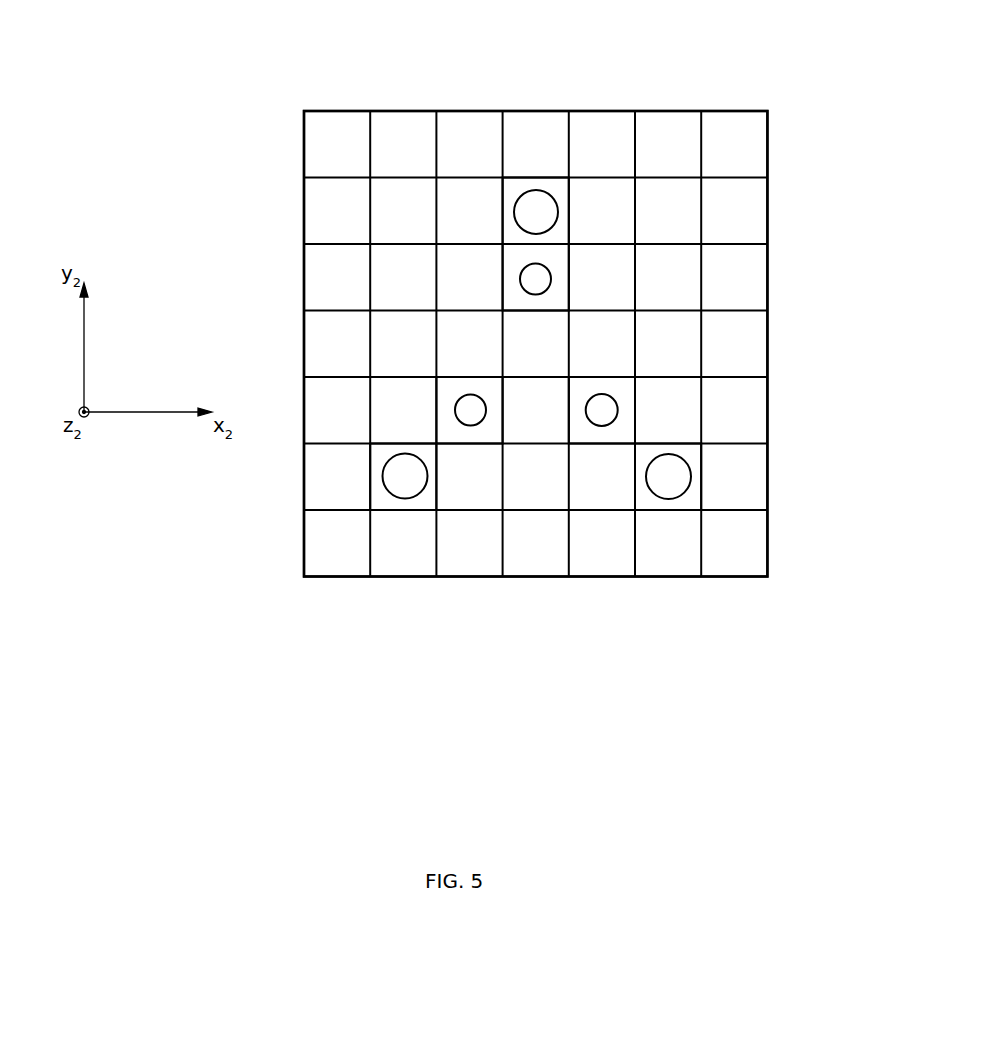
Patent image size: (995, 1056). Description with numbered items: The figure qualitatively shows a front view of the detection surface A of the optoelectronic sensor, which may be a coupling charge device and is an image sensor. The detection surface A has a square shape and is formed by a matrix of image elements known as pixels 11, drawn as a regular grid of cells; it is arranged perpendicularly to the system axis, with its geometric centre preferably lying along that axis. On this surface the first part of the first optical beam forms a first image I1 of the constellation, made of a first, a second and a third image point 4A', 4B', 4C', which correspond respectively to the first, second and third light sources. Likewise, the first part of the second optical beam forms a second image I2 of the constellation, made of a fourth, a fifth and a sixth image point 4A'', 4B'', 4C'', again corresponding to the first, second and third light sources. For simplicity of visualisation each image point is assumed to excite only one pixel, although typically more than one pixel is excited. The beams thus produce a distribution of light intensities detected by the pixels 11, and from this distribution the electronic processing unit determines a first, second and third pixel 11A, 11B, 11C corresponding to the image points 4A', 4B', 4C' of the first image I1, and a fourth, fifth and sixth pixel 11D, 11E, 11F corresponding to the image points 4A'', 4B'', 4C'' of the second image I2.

The pixels 11 is at (402, 127).
The first pixel 11A is at (626, 400).
The second pixel 11B is at (453, 388).
The third pixel 11C is at (512, 300).
The fourth pixel 11D is at (693, 457).
The fifth pixel 11E is at (378, 456).
The sixth pixel 11F is at (513, 190).
The first image point 4A' is at (605, 444).
The fourth image point 4A'' is at (696, 554).
The second image point 4B' is at (438, 408).
The fifth image point 4B'' is at (382, 544).
The third image point 4C' is at (574, 273).
The sixth image point 4C'' is at (559, 137).
The detection surface A is at (712, 80).
The first image I1 is at (570, 333).
The second image I2 is at (463, 550).